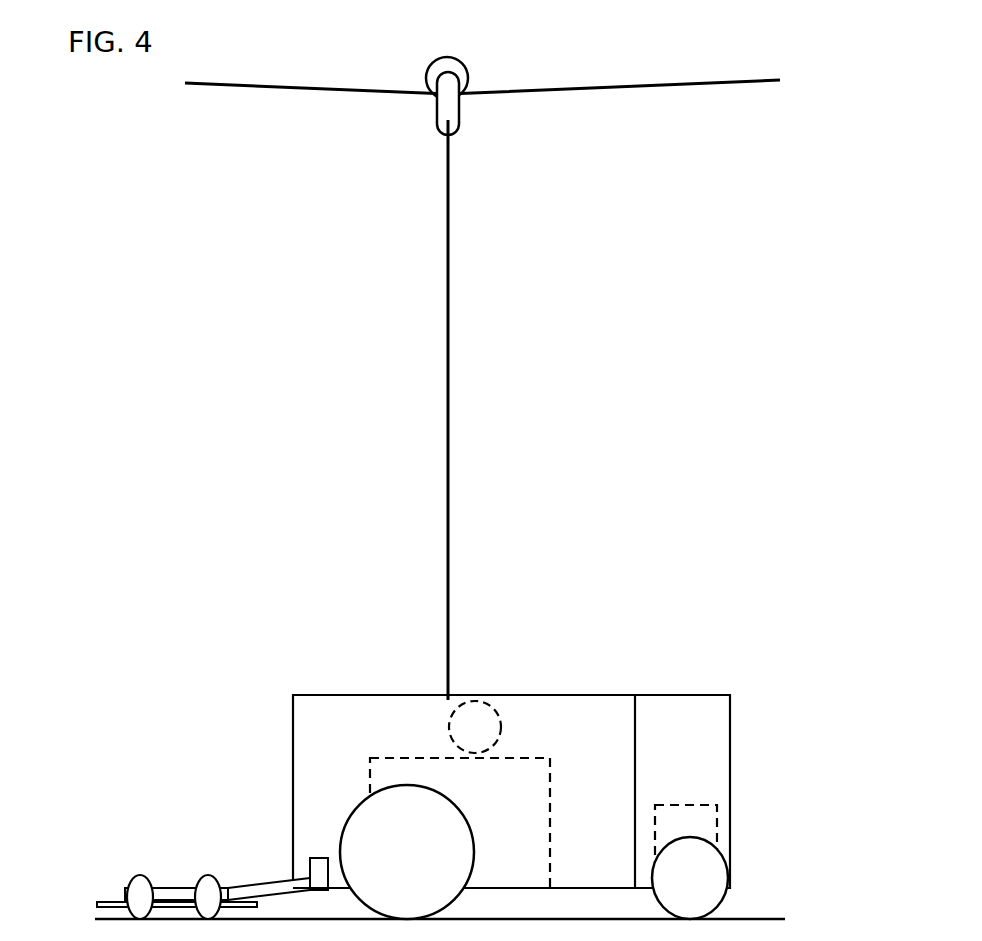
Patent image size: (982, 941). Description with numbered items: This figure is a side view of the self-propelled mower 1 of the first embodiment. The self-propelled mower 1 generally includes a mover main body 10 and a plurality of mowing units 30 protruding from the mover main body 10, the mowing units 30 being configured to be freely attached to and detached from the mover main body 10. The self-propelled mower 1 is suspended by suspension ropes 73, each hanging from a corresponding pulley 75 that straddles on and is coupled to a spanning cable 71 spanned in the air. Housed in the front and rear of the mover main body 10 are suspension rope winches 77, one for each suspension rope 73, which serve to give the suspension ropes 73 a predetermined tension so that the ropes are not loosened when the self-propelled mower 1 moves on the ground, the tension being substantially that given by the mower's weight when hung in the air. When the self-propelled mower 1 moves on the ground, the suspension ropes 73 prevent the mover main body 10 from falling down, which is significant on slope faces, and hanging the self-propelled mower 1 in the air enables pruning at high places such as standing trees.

The self-propelled mower 1 is at (236, 663).
The mover main body 10 is at (569, 795).
The mowing unit 30 is at (186, 860).
The spanning cable 71 is at (603, 95).
The suspension rope 73 is at (448, 272).
The pulley 75 is at (438, 109).
The suspension rope winch 77 is at (470, 727).